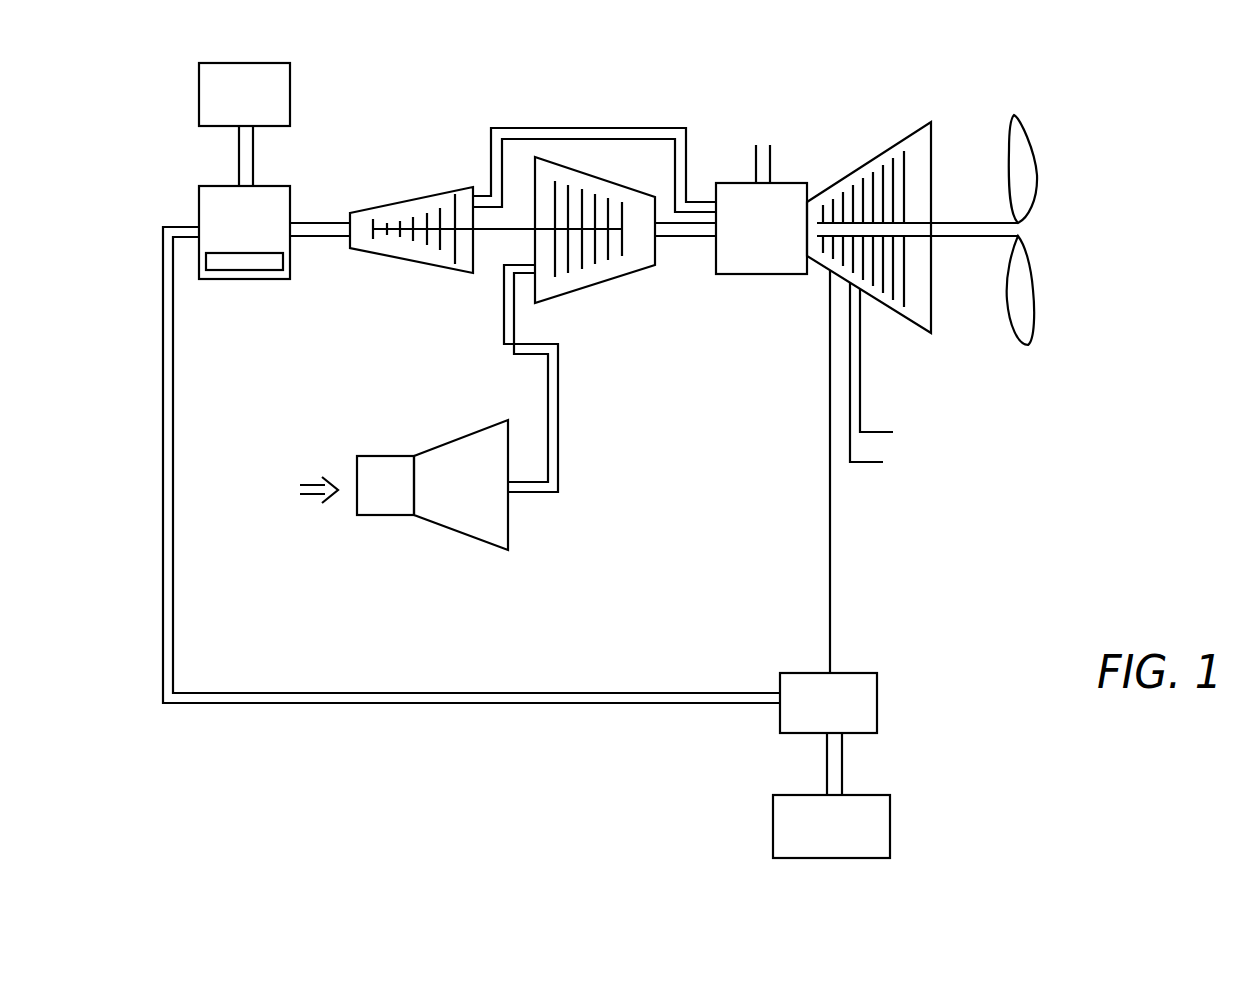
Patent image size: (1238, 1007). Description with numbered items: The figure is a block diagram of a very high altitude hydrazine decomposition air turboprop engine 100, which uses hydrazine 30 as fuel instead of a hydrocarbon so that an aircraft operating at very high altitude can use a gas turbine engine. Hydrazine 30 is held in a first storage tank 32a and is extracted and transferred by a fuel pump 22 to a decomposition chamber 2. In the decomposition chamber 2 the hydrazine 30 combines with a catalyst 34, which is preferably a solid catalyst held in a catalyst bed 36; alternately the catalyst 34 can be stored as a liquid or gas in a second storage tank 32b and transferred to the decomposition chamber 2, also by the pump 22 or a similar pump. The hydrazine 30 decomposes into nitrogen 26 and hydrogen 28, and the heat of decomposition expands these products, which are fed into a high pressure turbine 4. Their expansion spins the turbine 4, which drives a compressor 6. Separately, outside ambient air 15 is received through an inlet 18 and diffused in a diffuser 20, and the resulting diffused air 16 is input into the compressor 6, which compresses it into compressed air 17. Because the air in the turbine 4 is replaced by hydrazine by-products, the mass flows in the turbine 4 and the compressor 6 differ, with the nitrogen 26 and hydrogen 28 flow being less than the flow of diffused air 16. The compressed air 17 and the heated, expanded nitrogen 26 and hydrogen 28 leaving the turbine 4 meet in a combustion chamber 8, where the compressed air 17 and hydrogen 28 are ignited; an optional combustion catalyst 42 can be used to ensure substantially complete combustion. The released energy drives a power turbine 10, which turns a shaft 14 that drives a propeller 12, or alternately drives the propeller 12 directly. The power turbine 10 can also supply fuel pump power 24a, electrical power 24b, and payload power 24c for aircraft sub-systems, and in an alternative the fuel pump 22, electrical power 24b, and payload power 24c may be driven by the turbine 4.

The hydrazine decomposition air turboprop engine 100 is at (1124, 154).
The decomposition chamber 2 is at (290, 203).
The high pressure turbine 4 is at (418, 262).
The compressor 6 is at (607, 280).
The combustion chamber 8 is at (763, 274).
The power turbine 10 is at (883, 307).
The propeller 12 is at (1033, 305).
The shaft 14 is at (970, 237).
The ambient air 15 is at (303, 490).
The diffused air 16 is at (533, 492).
The compressed air 17 is at (683, 238).
The inlet 18 is at (383, 515).
The diffuser 20 is at (468, 537).
The fuel pump 22 is at (877, 700).
The fuel pump power 24a is at (830, 527).
The electrical power 24b is at (866, 462).
The payload power 24c is at (861, 410).
The nitrogen (N2) 26 is at (471, 387).
The hydrogen (H2) 28 is at (622, 132).
The hydrazine (N2H4) 30 is at (800, 832).
The first storage tank 32a is at (829, 826).
The second storage tank 32b is at (290, 85).
The catalyst 34 is at (246, 182).
The catalyst bed 36 is at (243, 270).
The combustion catalyst 42 is at (760, 160).